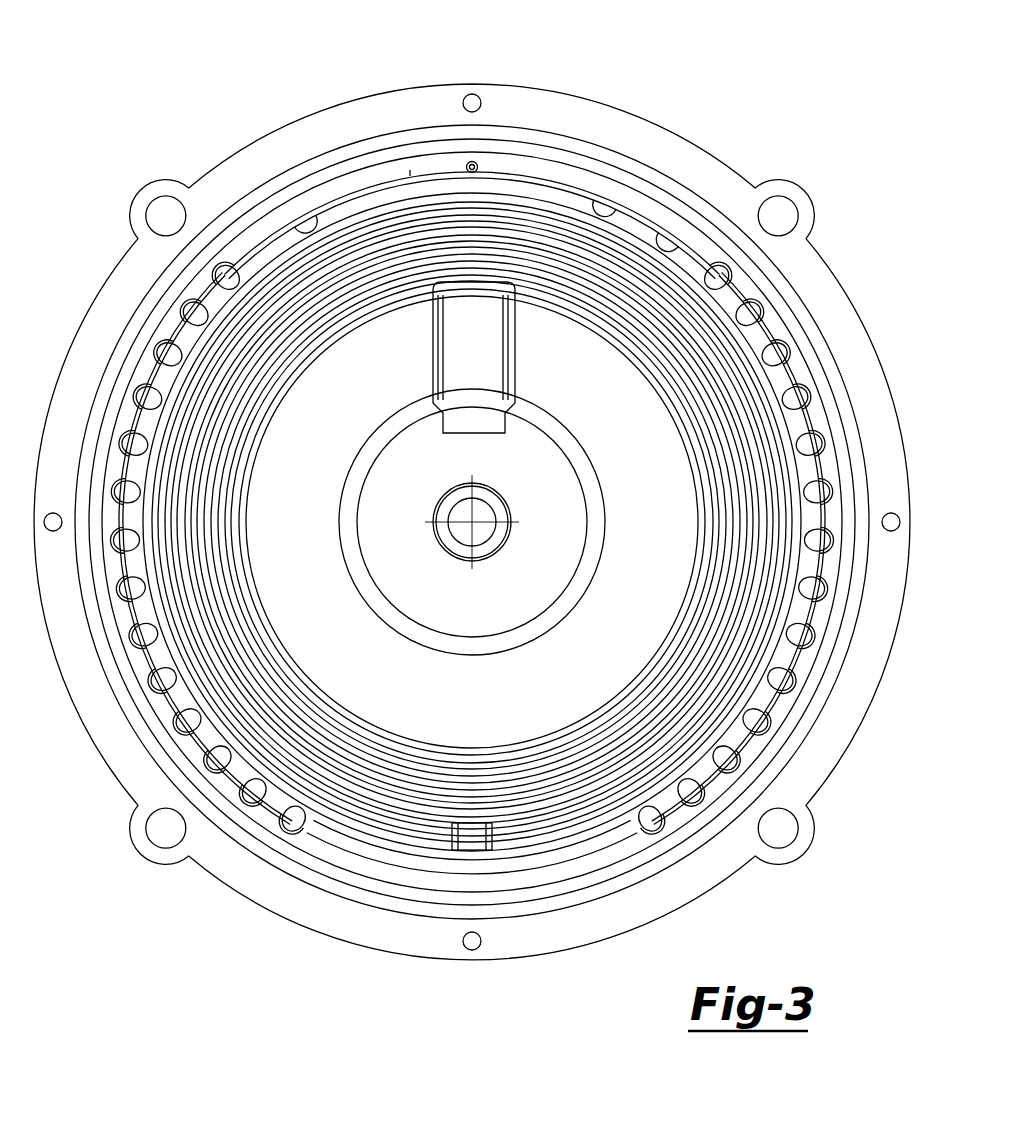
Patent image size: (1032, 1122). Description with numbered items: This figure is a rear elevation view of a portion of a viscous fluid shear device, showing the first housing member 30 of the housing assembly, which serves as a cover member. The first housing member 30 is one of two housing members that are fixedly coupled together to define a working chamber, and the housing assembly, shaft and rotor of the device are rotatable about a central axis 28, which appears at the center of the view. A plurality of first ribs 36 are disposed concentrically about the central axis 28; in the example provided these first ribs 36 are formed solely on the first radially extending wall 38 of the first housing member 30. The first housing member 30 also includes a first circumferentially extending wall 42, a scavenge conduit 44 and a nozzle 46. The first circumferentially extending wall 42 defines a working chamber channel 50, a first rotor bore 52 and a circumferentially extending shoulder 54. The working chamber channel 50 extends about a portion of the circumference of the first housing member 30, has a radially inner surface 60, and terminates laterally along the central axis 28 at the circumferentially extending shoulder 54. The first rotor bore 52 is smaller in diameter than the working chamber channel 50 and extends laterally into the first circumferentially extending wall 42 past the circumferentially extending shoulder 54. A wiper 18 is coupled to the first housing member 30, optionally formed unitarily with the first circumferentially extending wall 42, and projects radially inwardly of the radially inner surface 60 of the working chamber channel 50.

The wiper 18 is at (437, 175).
The central axis 28 is at (478, 518).
The first housing member 30 is at (740, 166).
The first ribs 36 is at (187, 592).
The first radially extending wall 38 is at (332, 378).
The first circumferentially extending wall 42 is at (872, 400).
The scavenge conduit 44 is at (478, 163).
The nozzle 46 is at (503, 183).
The working chamber channel 50 is at (300, 210).
The first rotor bore 52 is at (748, 290).
The circumferentially extending shoulder 54 is at (607, 196).
The radially inner surface 60 is at (690, 240).